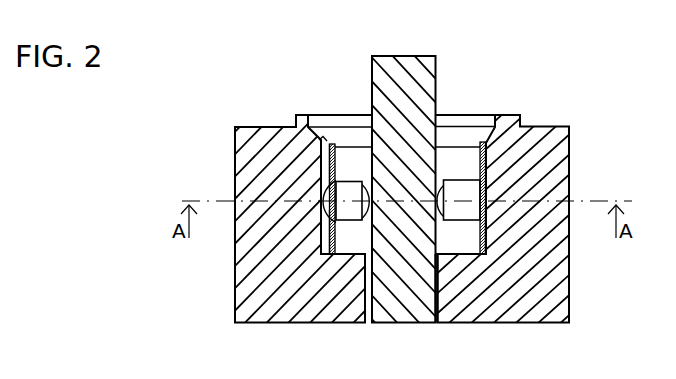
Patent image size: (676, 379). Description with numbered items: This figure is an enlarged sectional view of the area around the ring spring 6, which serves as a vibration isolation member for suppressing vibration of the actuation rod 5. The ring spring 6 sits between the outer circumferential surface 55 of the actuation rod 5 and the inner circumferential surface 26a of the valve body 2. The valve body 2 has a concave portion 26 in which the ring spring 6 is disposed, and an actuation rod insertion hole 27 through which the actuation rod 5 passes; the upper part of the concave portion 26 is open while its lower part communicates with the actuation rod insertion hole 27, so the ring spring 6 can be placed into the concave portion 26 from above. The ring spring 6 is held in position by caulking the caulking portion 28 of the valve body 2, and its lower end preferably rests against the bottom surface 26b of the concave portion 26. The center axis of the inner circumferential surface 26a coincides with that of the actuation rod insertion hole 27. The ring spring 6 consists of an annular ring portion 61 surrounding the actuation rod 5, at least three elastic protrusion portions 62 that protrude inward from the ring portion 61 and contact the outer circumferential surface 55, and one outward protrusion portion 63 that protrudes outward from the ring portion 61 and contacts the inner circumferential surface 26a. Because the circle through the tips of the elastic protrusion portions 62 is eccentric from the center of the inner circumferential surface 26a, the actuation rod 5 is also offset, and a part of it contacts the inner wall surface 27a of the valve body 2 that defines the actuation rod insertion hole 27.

The valve body 2 is at (552, 312).
The actuation rod 5 is at (420, 86).
The ring spring 6 is at (334, 147).
The concave portion 26 is at (320, 244).
The inner circumferential surface 26a is at (472, 238).
The bottom surface 26b is at (350, 256).
The actuation rod insertion hole 27 is at (366, 323).
The inner wall surface 27a is at (436, 300).
The caulking portion 28 is at (480, 140).
The outer circumferential surface 55 is at (437, 163).
The ring portion 61 is at (330, 168).
The elastic protrusion portions 62 is at (328, 192).
The outward protrusion portion 63 is at (322, 215).